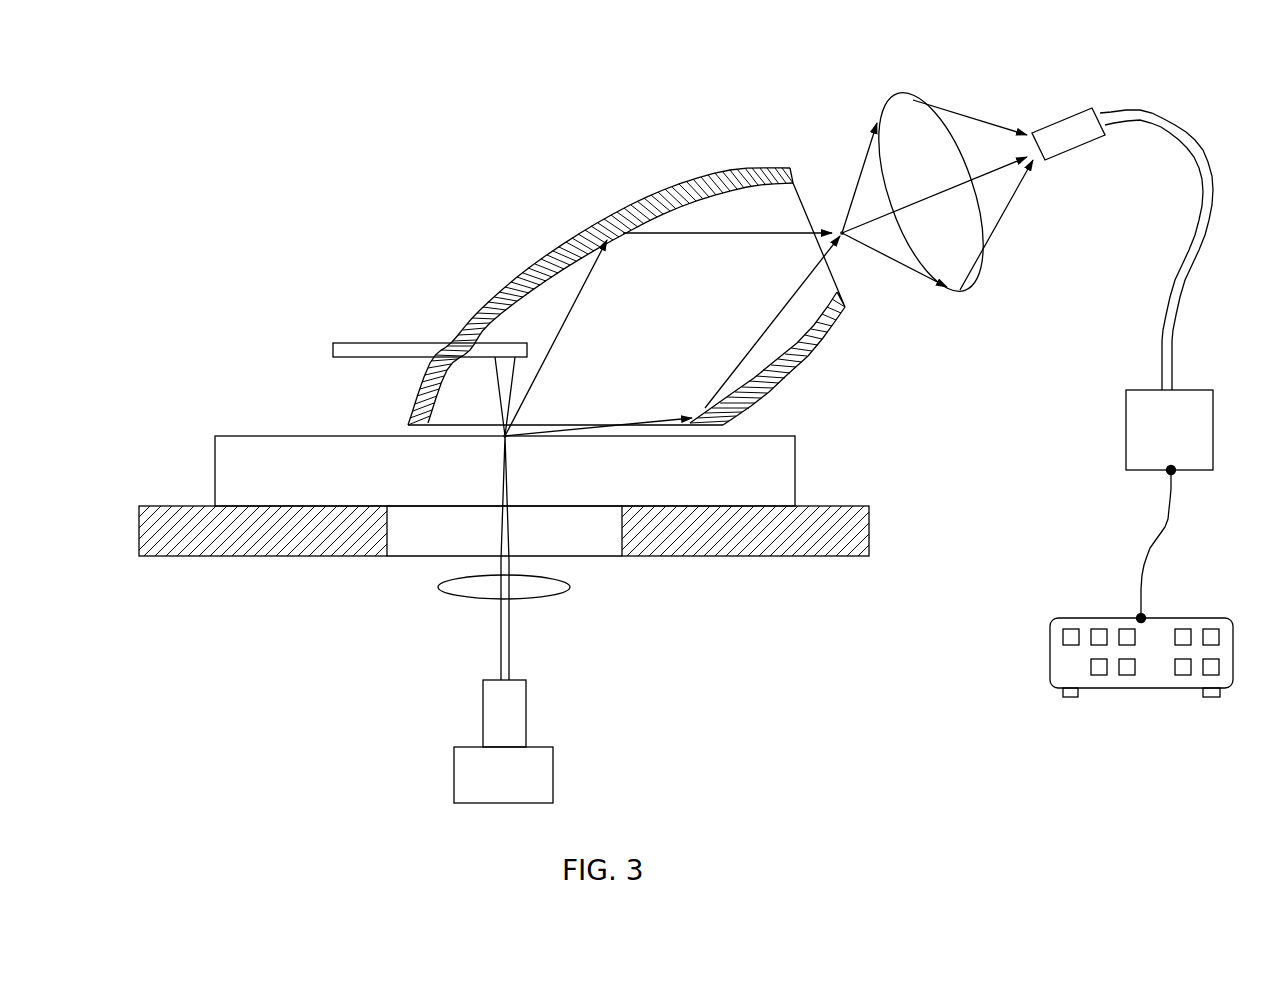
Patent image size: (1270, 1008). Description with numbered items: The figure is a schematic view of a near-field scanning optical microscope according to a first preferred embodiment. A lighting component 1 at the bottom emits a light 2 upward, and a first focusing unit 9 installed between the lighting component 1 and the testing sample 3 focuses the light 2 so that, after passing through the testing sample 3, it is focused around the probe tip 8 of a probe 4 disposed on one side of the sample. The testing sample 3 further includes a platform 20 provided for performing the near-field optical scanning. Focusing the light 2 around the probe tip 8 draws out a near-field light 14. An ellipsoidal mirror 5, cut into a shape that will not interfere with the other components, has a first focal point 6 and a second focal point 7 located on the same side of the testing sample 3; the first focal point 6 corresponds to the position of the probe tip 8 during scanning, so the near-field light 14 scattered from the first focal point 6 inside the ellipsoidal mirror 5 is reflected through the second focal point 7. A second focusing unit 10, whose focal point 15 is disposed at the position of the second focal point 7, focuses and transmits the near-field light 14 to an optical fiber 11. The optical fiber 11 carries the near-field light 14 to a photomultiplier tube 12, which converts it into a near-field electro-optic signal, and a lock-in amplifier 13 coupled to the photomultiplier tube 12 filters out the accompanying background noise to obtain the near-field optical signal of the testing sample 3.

The lighting component 1 is at (545, 777).
The light 2 is at (507, 667).
The testing sample 3 is at (738, 492).
The probe 4 is at (503, 372).
The ellipsoidal mirror 5 is at (713, 182).
The first focal point 6 is at (432, 537).
The second focal point 7 is at (915, 296).
The probe tip 8 is at (505, 436).
The first focusing unit 9 is at (567, 588).
The second focusing unit 10 is at (973, 263).
The optical fiber 11 is at (1072, 127).
The photomultiplier tube 12 is at (1188, 400).
The lock-in amplifier 13 is at (1063, 669).
The near-field light 14 is at (567, 313).
The focal point 15 is at (837, 247).
The platform 20 is at (853, 532).